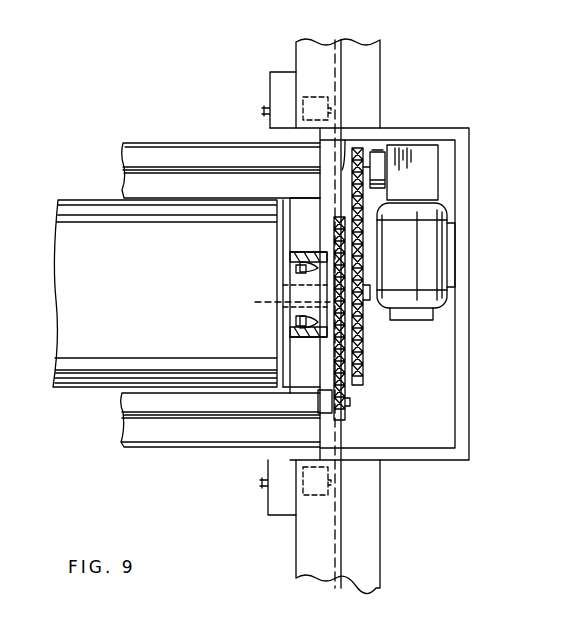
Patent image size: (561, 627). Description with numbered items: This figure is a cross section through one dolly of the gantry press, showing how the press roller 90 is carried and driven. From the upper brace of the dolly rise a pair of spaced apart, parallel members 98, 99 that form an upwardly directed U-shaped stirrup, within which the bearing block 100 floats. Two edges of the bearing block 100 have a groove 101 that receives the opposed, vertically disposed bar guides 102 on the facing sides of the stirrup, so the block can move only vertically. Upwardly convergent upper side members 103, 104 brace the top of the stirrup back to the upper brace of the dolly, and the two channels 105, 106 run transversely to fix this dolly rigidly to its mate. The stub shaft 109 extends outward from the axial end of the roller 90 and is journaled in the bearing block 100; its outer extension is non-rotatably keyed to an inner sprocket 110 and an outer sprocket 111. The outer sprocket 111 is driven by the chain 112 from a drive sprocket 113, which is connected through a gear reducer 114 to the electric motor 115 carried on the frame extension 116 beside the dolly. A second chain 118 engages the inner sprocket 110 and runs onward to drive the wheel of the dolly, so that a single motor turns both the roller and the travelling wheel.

The press roller 90 is at (117, 285).
The parallel member 98 is at (302, 255).
The parallel member 99 is at (300, 338).
The bearing block 100 is at (290, 287).
The groove 101 is at (300, 270).
The bar guide 102 is at (300, 254).
The upper side member 103 is at (307, 212).
The upper side member 104 is at (295, 375).
The channel 105 is at (207, 151).
The channel 106 is at (207, 435).
The stub shaft 109 is at (275, 302).
The inner sprocket 110 is at (334, 240).
The outer sprocket 111 is at (365, 362).
The chain 112 is at (383, 200).
The drive sprocket 113 is at (342, 165).
The gear reducer 114 is at (422, 162).
The electric motor 115 is at (425, 250).
The frame extension 116 is at (458, 301).
The chain 118 is at (332, 388).